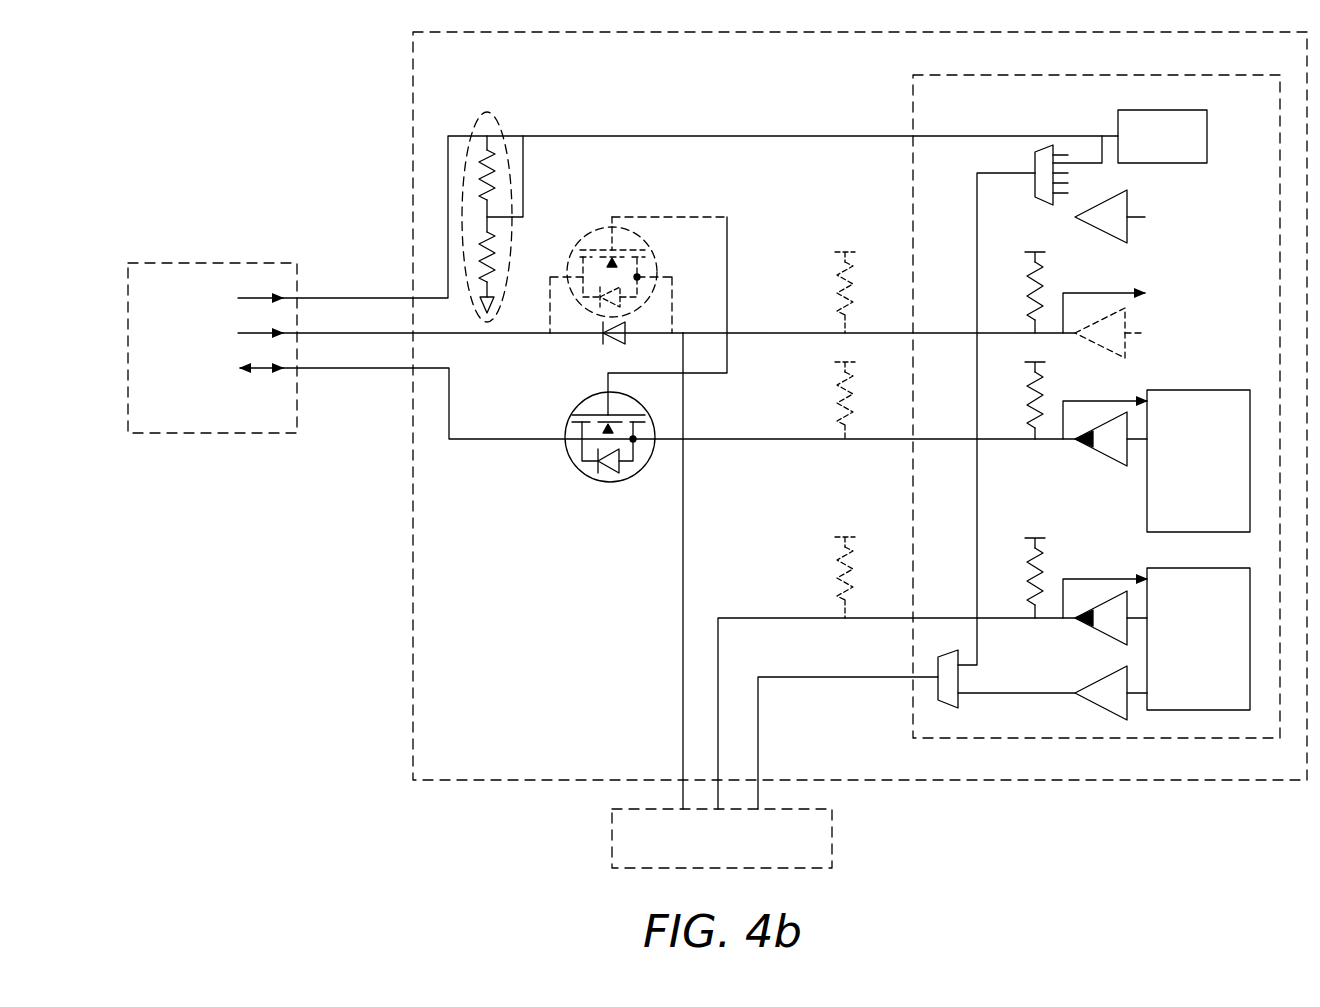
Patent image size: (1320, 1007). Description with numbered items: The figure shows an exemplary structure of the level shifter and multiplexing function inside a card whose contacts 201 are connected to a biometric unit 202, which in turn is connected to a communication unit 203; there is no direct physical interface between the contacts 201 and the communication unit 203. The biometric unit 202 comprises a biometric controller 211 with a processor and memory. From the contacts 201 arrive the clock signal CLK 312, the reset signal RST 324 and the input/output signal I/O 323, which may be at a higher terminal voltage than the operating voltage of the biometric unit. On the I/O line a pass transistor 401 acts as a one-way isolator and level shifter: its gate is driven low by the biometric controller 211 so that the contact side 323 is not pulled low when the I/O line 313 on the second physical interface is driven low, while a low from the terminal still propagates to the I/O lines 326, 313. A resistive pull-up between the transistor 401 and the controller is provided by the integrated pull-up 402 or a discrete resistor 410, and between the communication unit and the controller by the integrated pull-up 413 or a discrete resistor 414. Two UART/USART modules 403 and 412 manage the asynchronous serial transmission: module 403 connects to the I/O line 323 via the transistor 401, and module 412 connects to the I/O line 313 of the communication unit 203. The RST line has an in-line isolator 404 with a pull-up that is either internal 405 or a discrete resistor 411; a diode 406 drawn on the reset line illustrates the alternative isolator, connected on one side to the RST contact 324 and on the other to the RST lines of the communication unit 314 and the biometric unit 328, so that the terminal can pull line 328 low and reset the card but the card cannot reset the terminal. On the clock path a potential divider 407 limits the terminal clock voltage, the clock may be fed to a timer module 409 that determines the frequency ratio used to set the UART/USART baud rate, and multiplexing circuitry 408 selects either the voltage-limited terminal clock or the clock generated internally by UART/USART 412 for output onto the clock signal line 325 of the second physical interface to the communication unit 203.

The contacts 201 is at (268, 434).
The biometric unit 202 is at (413, 45).
The communication unit 203 is at (612, 825).
The biometric controller 211 is at (913, 95).
The clock signal line CLK 312 is at (323, 298).
The I/O line of the communication unit 313 is at (728, 618).
The RST line of the communication unit 314 is at (683, 659).
The I/O signal line 323 is at (368, 369).
The RST signal line 324 is at (380, 333).
The ISO_CLK line to communication unit 325 is at (796, 677).
The I/O signal line on biometric unit side 326 is at (736, 440).
The RST signal line of the biometric unit 328 is at (764, 333).
The pass transistor 401 is at (576, 472).
The integrated pull-up 402 is at (1044, 390).
The UART/USART module 403 is at (1209, 390).
The in-line isolator 404 is at (588, 228).
The internal resistive pull-up 405 is at (1044, 280).
The diode 406 is at (612, 346).
The potential divider 407 is at (510, 119).
The multiplexing circuitry 408 is at (937, 662).
The timer module 409 is at (1194, 164).
The discrete resistor 410 is at (830, 408).
The discrete resistor 411 is at (835, 260).
The UART/USART module 412 is at (1147, 568).
The integrated pull-up 413 is at (1027, 548).
The discrete resistor 414 is at (832, 557).